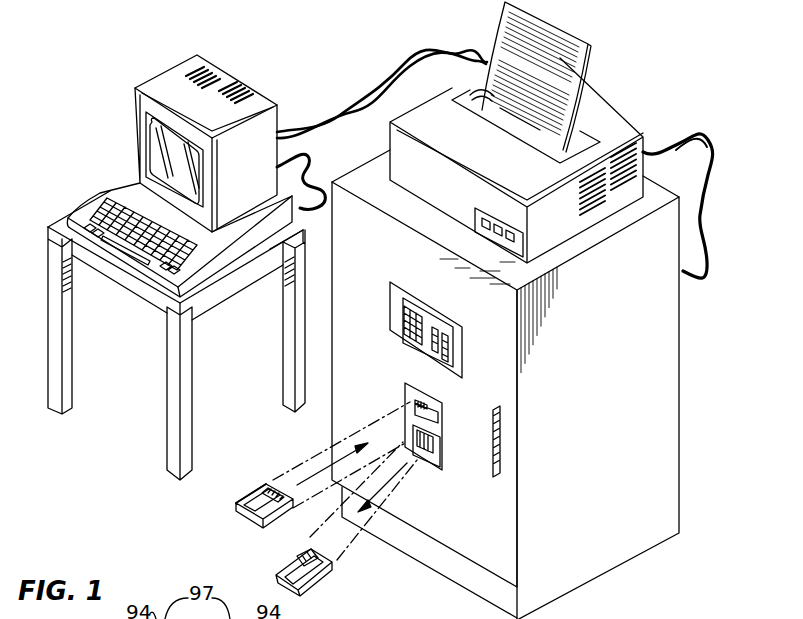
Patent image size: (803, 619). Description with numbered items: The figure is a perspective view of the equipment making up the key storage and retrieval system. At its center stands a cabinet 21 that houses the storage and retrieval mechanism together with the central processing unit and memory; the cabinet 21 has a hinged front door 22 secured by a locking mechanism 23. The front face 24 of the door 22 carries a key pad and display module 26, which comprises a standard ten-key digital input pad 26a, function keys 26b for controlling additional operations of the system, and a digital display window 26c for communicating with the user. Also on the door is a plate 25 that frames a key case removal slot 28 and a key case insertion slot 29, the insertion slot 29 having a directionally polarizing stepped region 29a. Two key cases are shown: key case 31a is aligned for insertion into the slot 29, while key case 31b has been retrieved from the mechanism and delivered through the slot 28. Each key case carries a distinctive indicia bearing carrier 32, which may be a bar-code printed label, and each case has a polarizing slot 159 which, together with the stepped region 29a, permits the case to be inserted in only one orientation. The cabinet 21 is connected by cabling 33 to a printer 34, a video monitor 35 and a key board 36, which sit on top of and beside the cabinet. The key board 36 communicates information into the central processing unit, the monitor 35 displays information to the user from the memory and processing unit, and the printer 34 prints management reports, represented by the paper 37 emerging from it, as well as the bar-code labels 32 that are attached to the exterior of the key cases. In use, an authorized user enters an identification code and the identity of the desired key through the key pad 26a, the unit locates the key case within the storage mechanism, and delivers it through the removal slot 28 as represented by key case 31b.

The cabinet 21 is at (614, 410).
The hinged front door 22 is at (478, 555).
The locking mechanism 23 is at (493, 408).
The front face 24 is at (333, 330).
The control panel 25 is at (423, 305).
The key pad and display module 26 is at (403, 307).
The ten key digital input pad 26a is at (403, 340).
The function keys 26b is at (457, 347).
The digital display window 26c is at (437, 323).
The key case removal slot 28 is at (417, 467).
The key case insertion slot 29 is at (435, 392).
The directionally polarizing stepped region 29a is at (417, 402).
The key case 31a is at (258, 484).
The key case 31b is at (315, 577).
The indicia bearing carrier 32 is at (237, 518).
The cabling 33 is at (413, 60).
The printer 34 is at (617, 118).
The video monitor 35 is at (177, 63).
The key board 36 is at (118, 177).
The paper 37 is at (588, 39).
The polarizing slot 159 is at (232, 514).